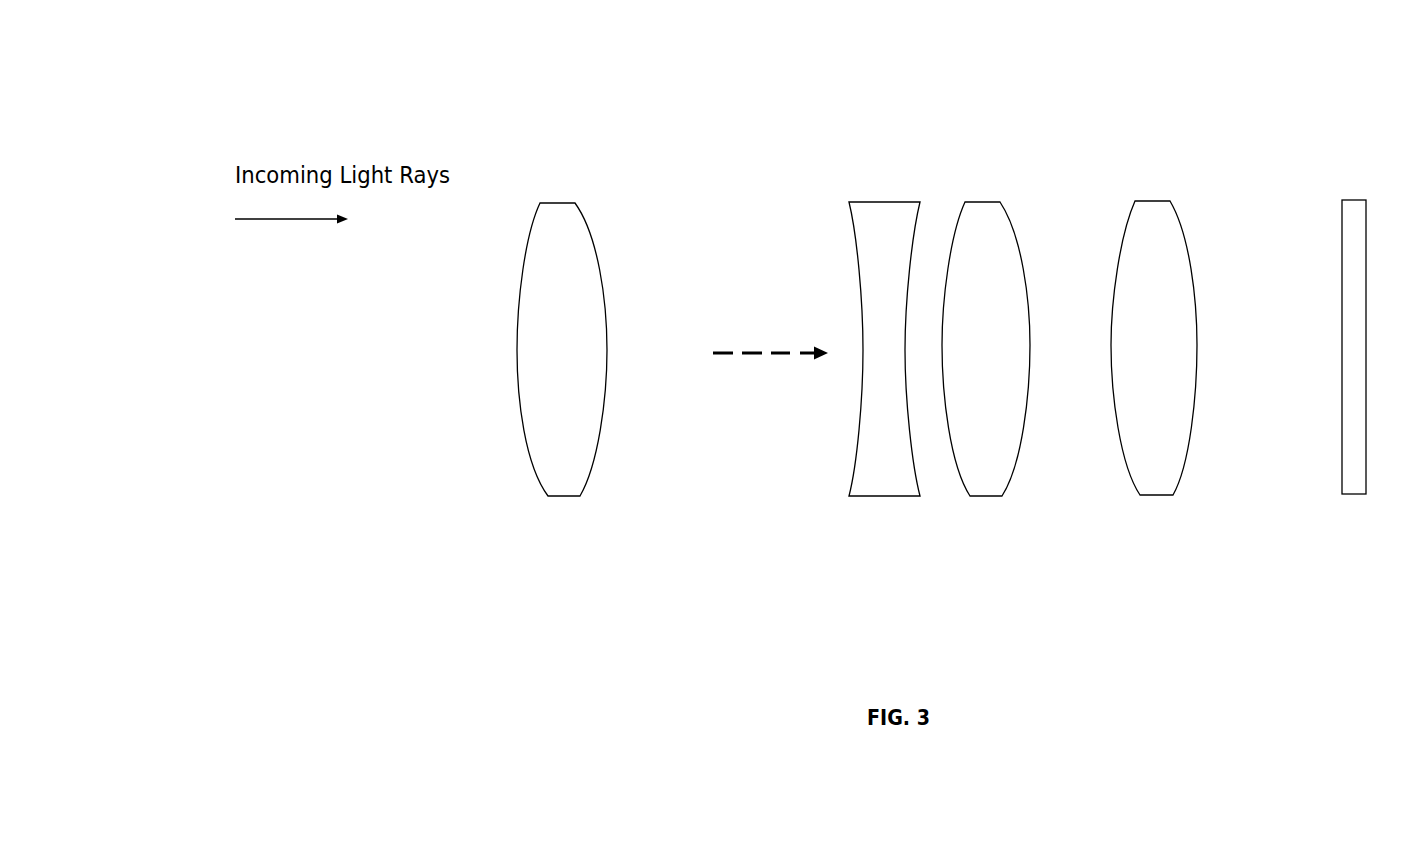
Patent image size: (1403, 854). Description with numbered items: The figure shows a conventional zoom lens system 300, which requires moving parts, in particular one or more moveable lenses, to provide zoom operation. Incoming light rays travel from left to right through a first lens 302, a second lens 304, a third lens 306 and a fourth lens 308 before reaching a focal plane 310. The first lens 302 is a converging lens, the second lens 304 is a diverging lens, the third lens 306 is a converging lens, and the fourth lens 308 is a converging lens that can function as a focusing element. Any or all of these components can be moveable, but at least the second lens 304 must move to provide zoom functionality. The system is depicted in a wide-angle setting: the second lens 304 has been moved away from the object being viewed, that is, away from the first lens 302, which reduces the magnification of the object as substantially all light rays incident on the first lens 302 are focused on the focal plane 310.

The conventional zoom lens system 300 is at (415, 96).
The first lens 302 is at (560, 498).
The second lens 304 is at (890, 497).
The third lens 306 is at (987, 497).
The fourth lens 308 is at (1162, 496).
The focal plane 310 is at (1353, 495).